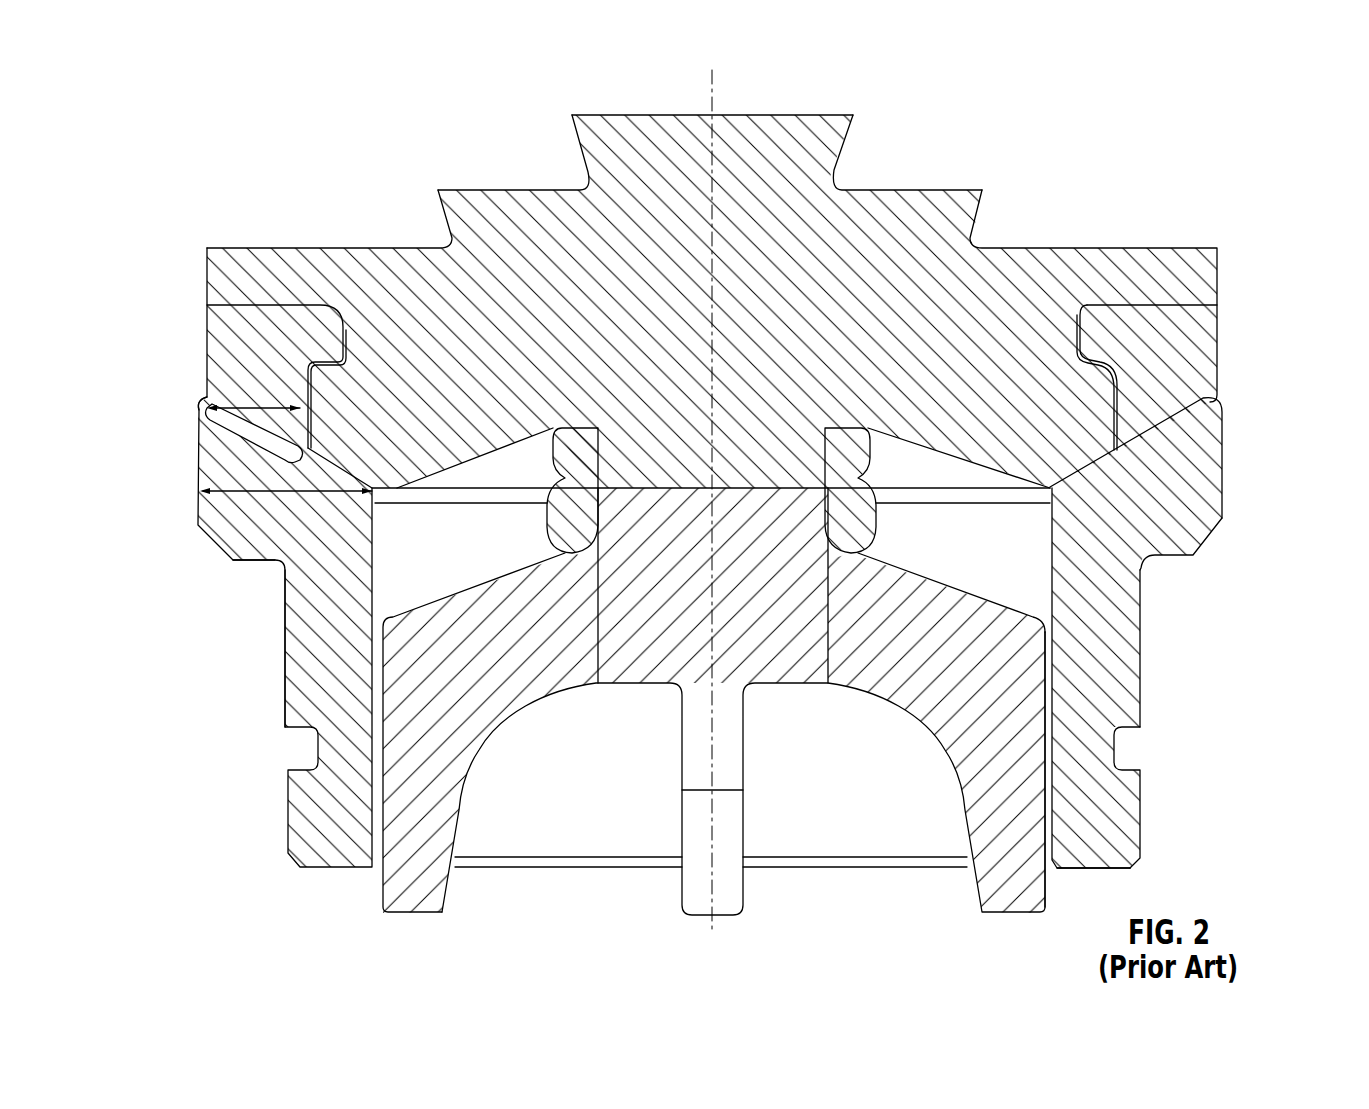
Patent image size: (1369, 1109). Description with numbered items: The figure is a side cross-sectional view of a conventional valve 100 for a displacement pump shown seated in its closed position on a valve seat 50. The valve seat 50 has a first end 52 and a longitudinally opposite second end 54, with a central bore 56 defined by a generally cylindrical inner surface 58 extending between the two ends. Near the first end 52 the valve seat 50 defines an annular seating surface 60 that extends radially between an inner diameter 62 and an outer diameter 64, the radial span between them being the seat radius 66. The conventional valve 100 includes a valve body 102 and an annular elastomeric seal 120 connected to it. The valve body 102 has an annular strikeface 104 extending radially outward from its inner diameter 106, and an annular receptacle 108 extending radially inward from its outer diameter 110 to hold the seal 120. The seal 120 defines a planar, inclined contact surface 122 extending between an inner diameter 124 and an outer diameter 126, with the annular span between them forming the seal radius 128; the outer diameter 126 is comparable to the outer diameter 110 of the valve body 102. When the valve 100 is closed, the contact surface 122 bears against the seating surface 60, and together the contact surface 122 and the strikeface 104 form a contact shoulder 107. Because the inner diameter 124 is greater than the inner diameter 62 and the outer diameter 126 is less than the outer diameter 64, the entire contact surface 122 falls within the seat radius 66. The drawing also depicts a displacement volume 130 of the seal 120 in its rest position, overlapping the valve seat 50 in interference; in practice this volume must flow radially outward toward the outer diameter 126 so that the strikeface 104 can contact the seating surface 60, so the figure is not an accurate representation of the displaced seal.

The conventional valve 100 is at (156, 110).
The valve body 102 is at (752, 130).
The annular strikeface 104 is at (1085, 468).
The inner diameter of the valve body 106 is at (1068, 490).
The contact shoulder 107 is at (293, 517).
The annular receptacle 108 is at (1127, 305).
The outer diameter of the valve body 110 is at (1222, 276).
The seal 120 is at (1218, 352).
The contact surface 122 is at (1157, 443).
The inner diameter of the contact surface 124 is at (275, 460).
The outer diameter of the contact surface 126 is at (200, 428).
The seal radius 128 is at (213, 397).
The displacement volume 130 is at (1185, 423).
The valve seat 50 is at (186, 754).
The first end 52 is at (1225, 402).
The second end 54 is at (1113, 868).
The central bore 56 is at (1040, 590).
The cylindrical inner surface 58 is at (1050, 690).
The annular seating surface 60 is at (1062, 487).
The inner diameter of the seating surface 62 is at (200, 491).
The outer diameter of the seating surface 64 is at (188, 407).
The seat radius 66 is at (257, 491).